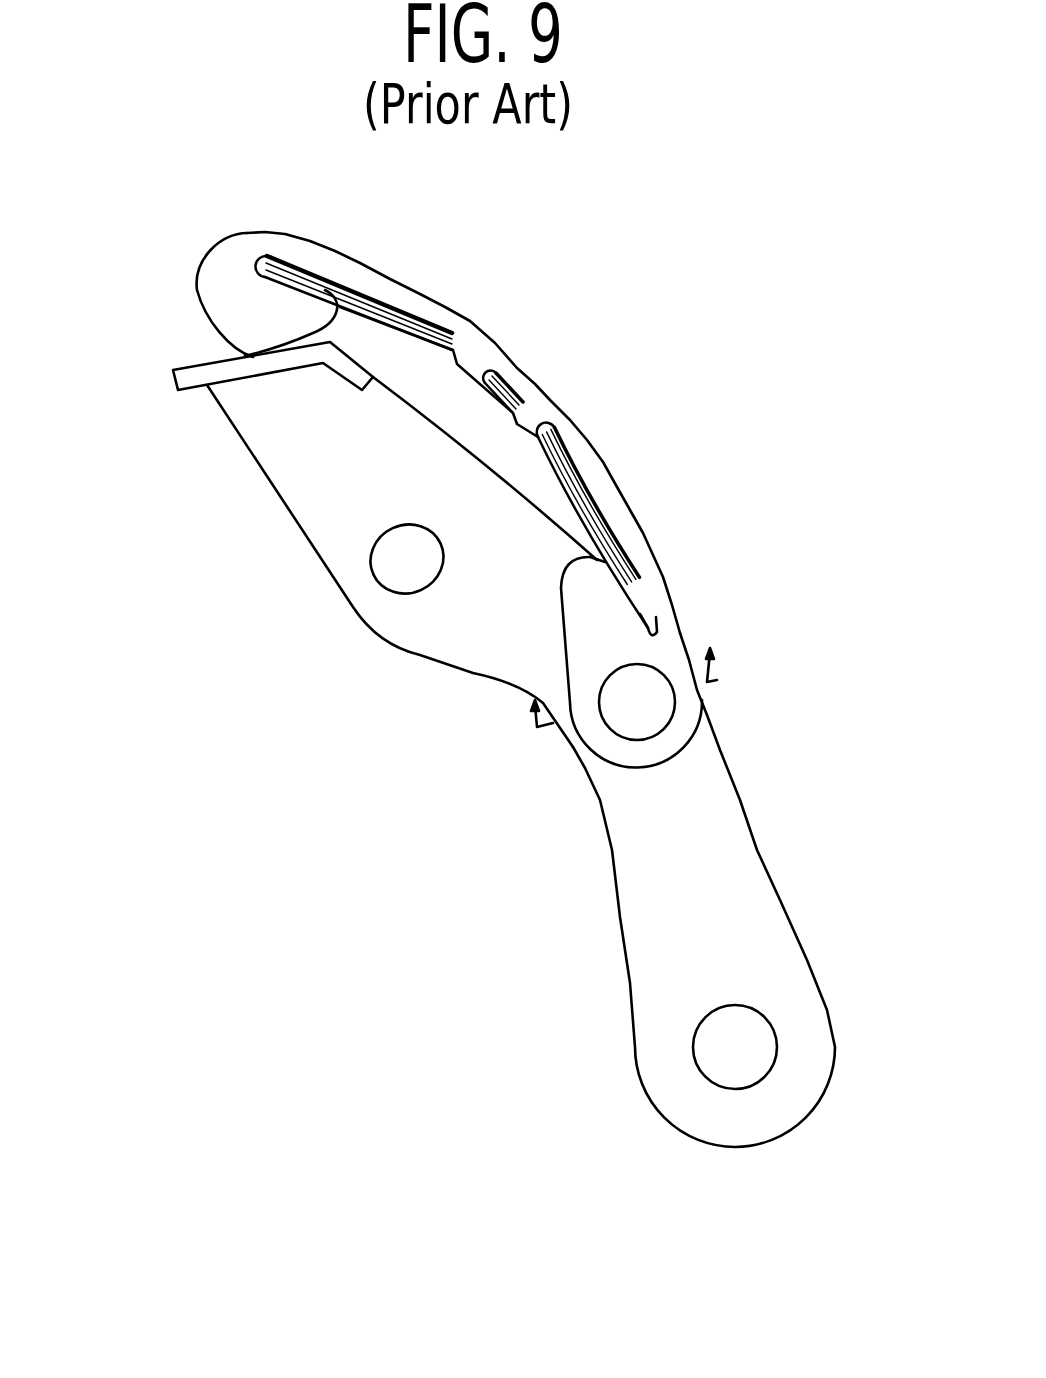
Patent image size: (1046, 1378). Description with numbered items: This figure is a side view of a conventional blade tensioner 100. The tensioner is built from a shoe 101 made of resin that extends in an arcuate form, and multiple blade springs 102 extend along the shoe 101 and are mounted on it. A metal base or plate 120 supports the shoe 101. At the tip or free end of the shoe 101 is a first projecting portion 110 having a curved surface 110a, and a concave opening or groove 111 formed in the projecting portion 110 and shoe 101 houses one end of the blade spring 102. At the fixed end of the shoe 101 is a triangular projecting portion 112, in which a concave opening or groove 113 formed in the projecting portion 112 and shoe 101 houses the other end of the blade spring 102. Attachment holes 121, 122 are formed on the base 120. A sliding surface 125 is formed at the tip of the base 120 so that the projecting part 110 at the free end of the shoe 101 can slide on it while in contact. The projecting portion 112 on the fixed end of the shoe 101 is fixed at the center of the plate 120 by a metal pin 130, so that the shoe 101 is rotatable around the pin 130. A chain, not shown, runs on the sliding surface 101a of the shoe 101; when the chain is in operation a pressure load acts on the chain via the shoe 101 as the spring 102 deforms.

The conventional blade tensioner 100 is at (696, 424).
The shoe 101 is at (480, 338).
The sliding surface 101a is at (552, 405).
The blade springs 102 is at (573, 497).
The first projecting portion 110 is at (212, 296).
The curved surface 110a is at (303, 343).
The concave opening or groove 111 is at (300, 283).
The triangular projecting portion 112 is at (567, 590).
The concave opening or groove 113 is at (650, 614).
The metal base or plate 120 is at (760, 900).
The attachment hole 121 is at (747, 1080).
The attachment hole 122 is at (382, 586).
The sliding surface 125 is at (190, 363).
The metal pin 130 is at (650, 723).